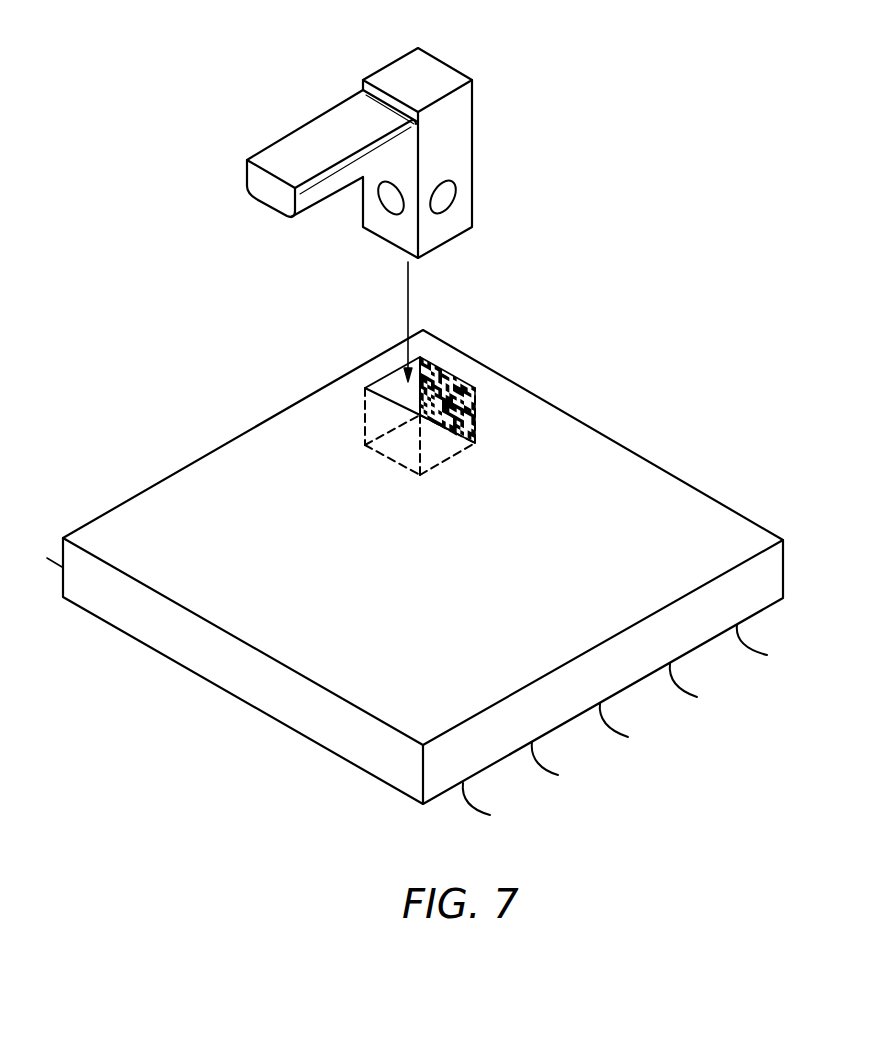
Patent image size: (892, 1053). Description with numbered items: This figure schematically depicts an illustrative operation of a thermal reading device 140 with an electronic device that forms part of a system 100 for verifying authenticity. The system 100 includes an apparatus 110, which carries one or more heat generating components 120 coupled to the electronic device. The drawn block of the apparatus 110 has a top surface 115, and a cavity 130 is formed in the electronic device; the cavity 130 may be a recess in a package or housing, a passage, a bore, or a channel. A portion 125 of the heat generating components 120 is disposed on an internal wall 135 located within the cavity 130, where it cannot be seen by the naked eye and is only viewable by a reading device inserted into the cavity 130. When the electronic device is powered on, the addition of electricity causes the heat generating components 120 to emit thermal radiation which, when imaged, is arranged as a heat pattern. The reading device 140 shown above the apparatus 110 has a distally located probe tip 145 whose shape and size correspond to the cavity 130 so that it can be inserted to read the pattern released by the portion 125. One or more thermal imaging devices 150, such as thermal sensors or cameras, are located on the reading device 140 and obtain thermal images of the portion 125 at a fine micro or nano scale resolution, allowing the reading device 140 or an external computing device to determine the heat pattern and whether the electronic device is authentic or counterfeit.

The system 100 is at (415, 412).
The apparatus 110 is at (225, 678).
The top surface 115 is at (682, 502).
The heat generating components 120 is at (417, 413).
The portion of the heat generating components 125 is at (448, 372).
The cavity 130 is at (331, 346).
The internal wall 135 is at (475, 425).
The reading device 140 is at (385, 65).
The probe tip 145 is at (502, 169).
The thermal imaging devices 150 is at (457, 192).